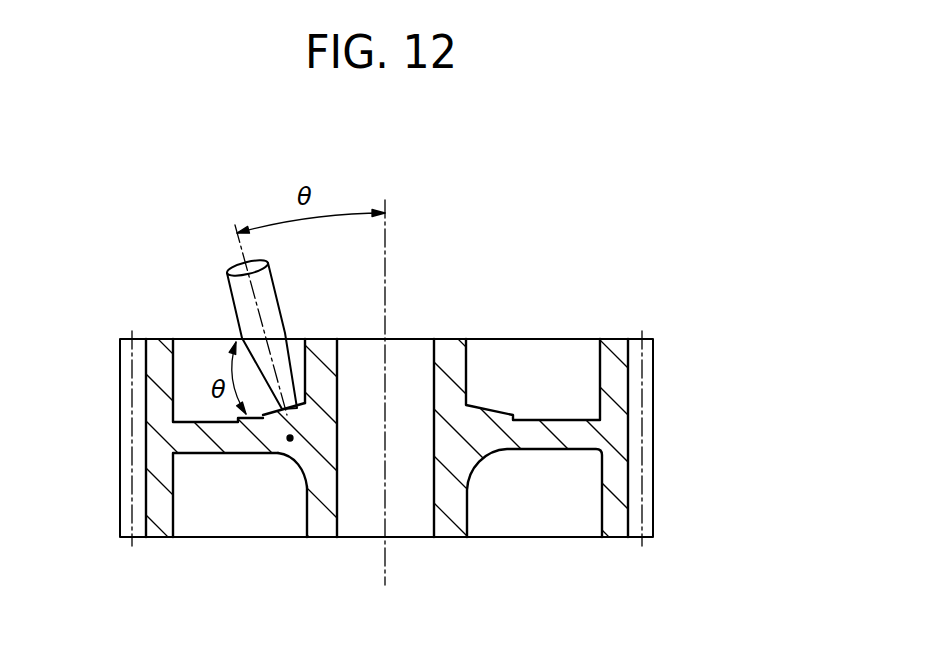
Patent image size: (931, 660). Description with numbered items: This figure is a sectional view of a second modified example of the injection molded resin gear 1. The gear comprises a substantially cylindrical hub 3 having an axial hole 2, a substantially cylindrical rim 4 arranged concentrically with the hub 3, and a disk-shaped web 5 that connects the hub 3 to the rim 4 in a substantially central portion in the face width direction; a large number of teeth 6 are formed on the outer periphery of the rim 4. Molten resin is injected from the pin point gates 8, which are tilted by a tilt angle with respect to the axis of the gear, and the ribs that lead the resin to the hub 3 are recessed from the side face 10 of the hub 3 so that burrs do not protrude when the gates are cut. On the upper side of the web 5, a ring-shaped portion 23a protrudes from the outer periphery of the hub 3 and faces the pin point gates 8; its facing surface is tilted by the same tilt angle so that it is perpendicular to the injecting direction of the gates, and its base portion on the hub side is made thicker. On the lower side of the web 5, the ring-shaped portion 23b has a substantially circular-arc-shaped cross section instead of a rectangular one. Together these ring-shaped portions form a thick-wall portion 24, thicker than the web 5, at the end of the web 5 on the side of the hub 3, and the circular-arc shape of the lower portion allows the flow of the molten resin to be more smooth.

The injection molded resin gear 1 is at (555, 338).
The axial hole 2 is at (435, 500).
The hub 3 is at (327, 338).
The rim 4 is at (163, 350).
The web 5 is at (210, 454).
The teeth 6 is at (120, 445).
The pin point gates 8 is at (225, 290).
The side face of the hub 10 is at (385, 293).
The ring-shaped portion 23a is at (297, 410).
The ring-shaped portion 23b is at (279, 456).
The thick-wall portion 24 is at (290, 440).